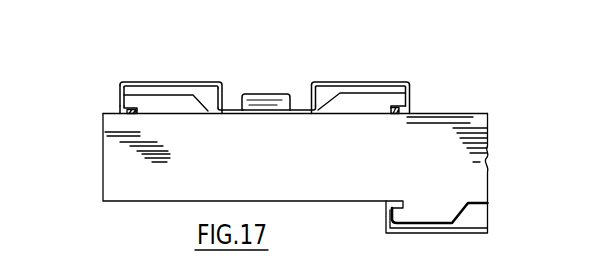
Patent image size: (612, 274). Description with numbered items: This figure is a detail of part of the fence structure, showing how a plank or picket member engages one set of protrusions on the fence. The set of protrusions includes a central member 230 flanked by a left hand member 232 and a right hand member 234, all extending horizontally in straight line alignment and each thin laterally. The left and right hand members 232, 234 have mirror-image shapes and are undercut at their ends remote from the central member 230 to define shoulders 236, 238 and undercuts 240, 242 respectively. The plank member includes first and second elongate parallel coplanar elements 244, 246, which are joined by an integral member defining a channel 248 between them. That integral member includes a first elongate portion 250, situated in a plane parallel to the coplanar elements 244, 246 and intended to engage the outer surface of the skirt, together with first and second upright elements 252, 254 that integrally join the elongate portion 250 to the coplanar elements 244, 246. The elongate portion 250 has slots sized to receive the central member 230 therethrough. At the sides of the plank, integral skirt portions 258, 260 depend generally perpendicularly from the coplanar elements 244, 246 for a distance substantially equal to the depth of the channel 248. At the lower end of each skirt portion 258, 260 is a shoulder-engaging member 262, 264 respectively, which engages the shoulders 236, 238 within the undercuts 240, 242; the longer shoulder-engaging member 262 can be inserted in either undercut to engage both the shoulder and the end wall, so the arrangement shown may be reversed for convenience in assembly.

The central member 230 is at (264, 103).
The left hand member 232 is at (167, 100).
The right hand member 234 is at (368, 102).
The shoulder 236 is at (131, 107).
The shoulder 238 is at (410, 84).
The undercut 240 is at (130, 114).
The undercut 242 is at (394, 112).
The first elongate coplanar element 244 is at (199, 83).
The second elongate coplanar element 246 is at (396, 95).
The channel 248 is at (298, 106).
The first elongate portion 250 is at (307, 114).
The first upright element 252 is at (217, 100).
The second upright element 254 is at (320, 90).
The skirt portion 258 is at (121, 98).
The skirt portion 260 is at (410, 98).
The shoulder-engaging member 262 is at (132, 118).
The shoulder-engaging member 264 is at (399, 114).